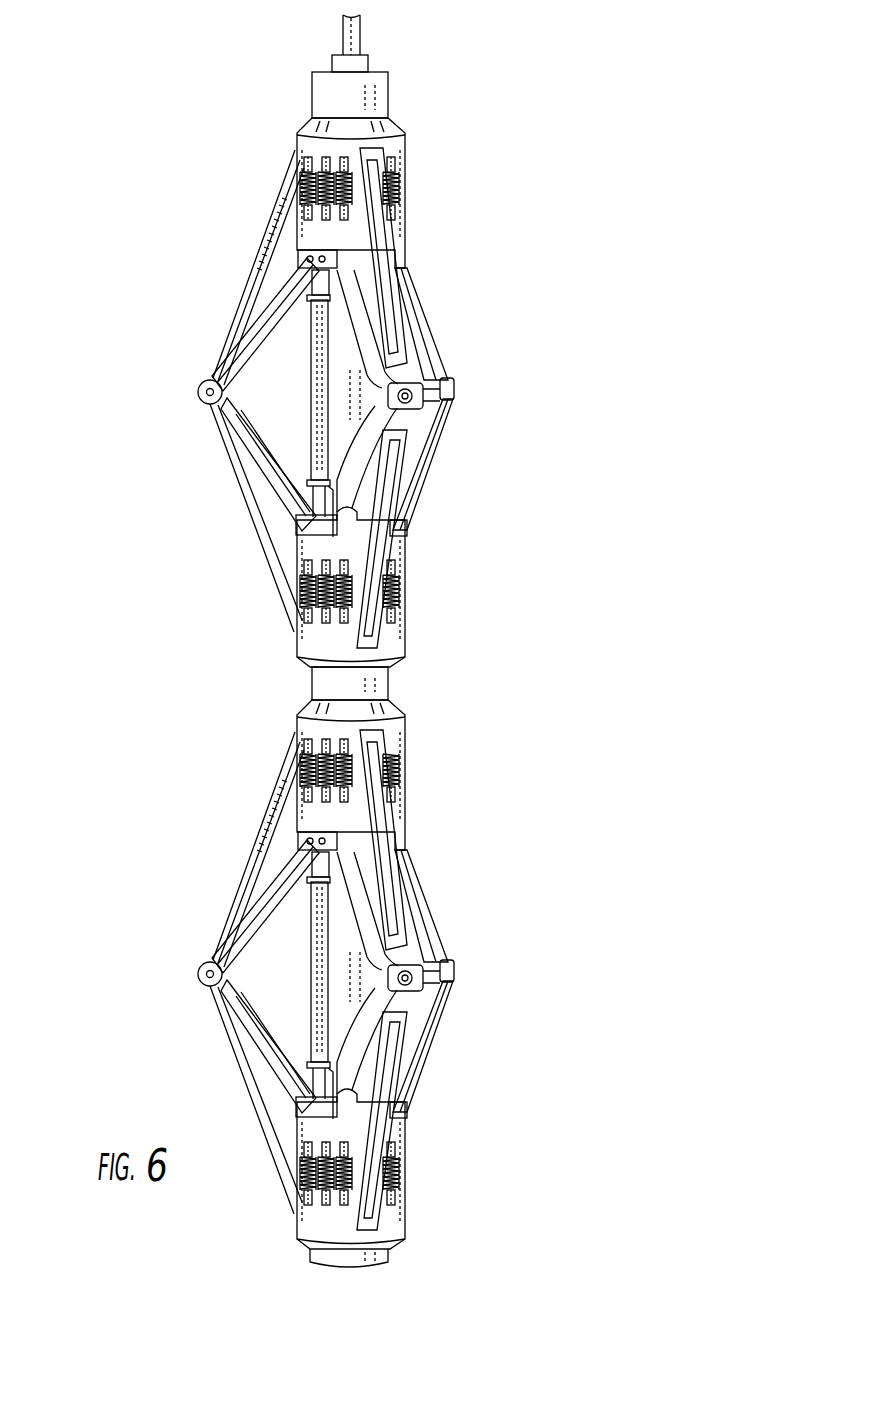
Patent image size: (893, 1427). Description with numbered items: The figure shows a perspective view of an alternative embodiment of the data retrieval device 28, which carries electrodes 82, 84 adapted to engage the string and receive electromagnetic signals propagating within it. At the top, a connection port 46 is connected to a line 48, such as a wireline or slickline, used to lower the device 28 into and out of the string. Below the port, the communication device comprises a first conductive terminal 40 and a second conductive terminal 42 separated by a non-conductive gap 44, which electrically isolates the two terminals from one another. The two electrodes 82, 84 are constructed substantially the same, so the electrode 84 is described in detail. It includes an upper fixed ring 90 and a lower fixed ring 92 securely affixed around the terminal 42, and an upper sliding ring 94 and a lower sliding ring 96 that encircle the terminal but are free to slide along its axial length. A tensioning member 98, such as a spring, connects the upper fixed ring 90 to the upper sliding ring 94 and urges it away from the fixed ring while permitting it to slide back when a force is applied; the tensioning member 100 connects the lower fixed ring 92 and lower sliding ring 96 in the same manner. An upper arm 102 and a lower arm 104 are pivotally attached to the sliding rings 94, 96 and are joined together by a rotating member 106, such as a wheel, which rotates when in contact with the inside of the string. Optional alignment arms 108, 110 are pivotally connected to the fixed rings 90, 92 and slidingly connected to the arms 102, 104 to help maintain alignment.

The data retrieval device 28 is at (90, 229).
The first conductive terminal 40 is at (308, 413).
The second conductive terminal 42 is at (312, 920).
The non-conductive gap 44 is at (312, 680).
The connection port 46 is at (368, 62).
The line 48 is at (357, 31).
The electrode 82 is at (430, 186).
The electrode 84 is at (474, 1121).
The upper fixed ring 90 is at (412, 745).
The lower fixed ring 92 is at (393, 1208).
The upper sliding ring 94 is at (403, 805).
The lower sliding ring 96 is at (402, 1156).
The tensioning member 98 is at (400, 770).
The tensioning member 100 is at (402, 1180).
The upper arm 102 is at (412, 918).
The lower arm 104 is at (408, 1044).
The rotating member 106 is at (420, 988).
The alignment arm 108 is at (388, 864).
The alignment arm 110 is at (385, 1093).